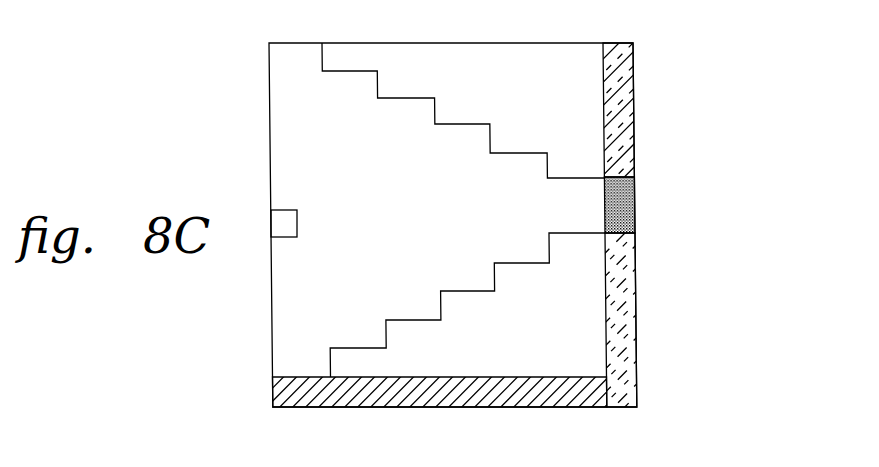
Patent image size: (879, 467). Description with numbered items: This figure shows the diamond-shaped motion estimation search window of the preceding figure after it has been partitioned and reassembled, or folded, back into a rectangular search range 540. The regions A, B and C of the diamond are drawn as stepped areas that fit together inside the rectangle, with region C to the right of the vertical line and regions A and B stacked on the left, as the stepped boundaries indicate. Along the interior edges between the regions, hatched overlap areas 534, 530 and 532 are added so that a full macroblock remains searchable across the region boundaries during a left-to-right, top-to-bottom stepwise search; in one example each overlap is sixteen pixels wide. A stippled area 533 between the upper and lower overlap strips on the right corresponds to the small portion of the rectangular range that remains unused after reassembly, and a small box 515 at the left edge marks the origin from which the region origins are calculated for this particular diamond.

The layered structure 540 is at (258, 89).
The contact region 515 is at (295, 237).
The first layer 534 is at (614, 95).
The second layer 533 is at (614, 222).
The third layer 530 is at (614, 322).
The bottom layer 532 is at (282, 390).